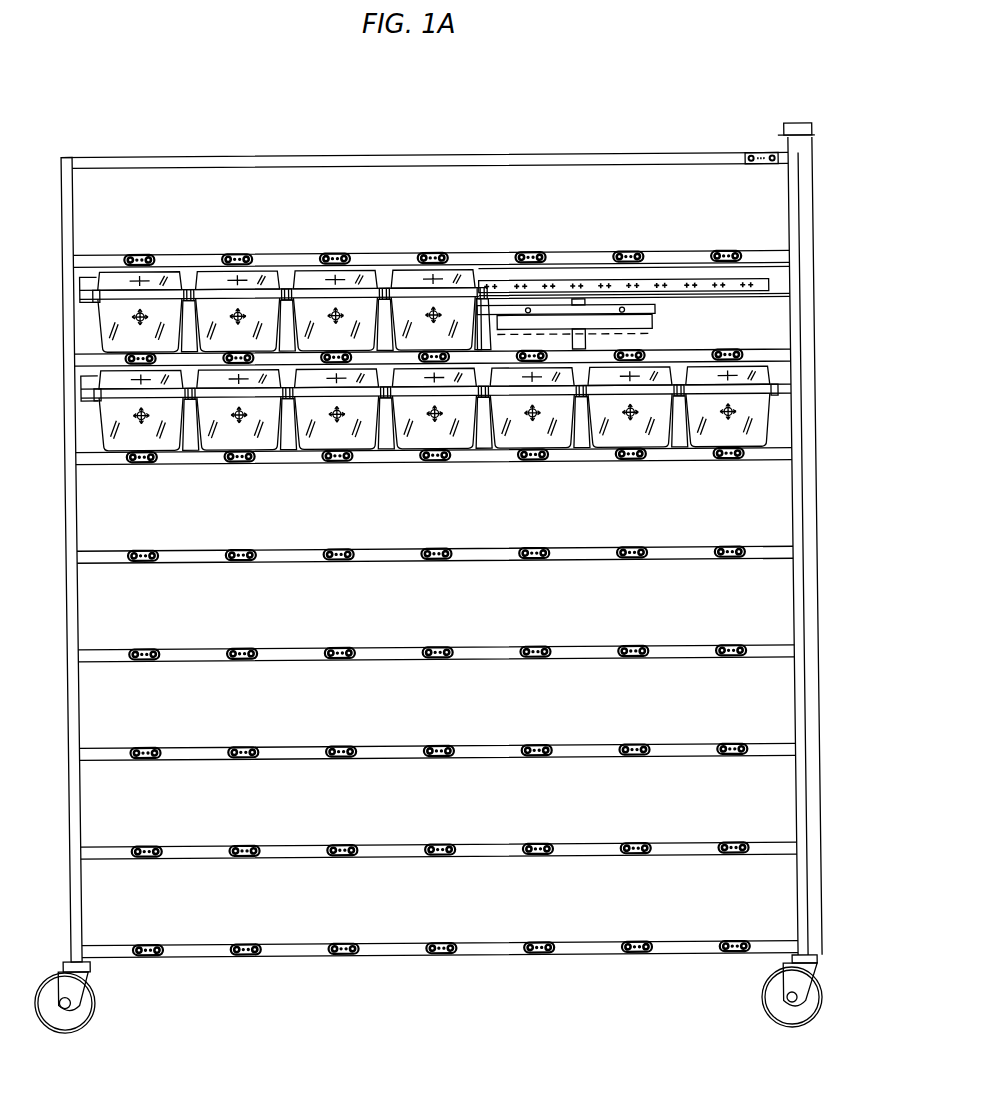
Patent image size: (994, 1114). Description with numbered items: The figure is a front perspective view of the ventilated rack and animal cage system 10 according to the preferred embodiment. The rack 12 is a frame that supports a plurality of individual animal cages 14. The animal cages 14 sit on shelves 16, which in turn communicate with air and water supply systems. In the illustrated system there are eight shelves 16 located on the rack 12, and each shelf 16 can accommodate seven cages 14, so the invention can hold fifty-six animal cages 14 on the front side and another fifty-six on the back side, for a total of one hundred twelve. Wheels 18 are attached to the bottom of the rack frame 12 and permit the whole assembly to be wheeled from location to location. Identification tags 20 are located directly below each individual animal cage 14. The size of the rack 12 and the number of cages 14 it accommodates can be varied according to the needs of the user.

The ventilated rack and animal cage system 10 is at (820, 260).
The rack 12 is at (667, 155).
The animal cage 14 is at (665, 346).
The shelf 16 is at (491, 462).
The wheel 18 is at (90, 998).
The identification tag 20 is at (540, 546).